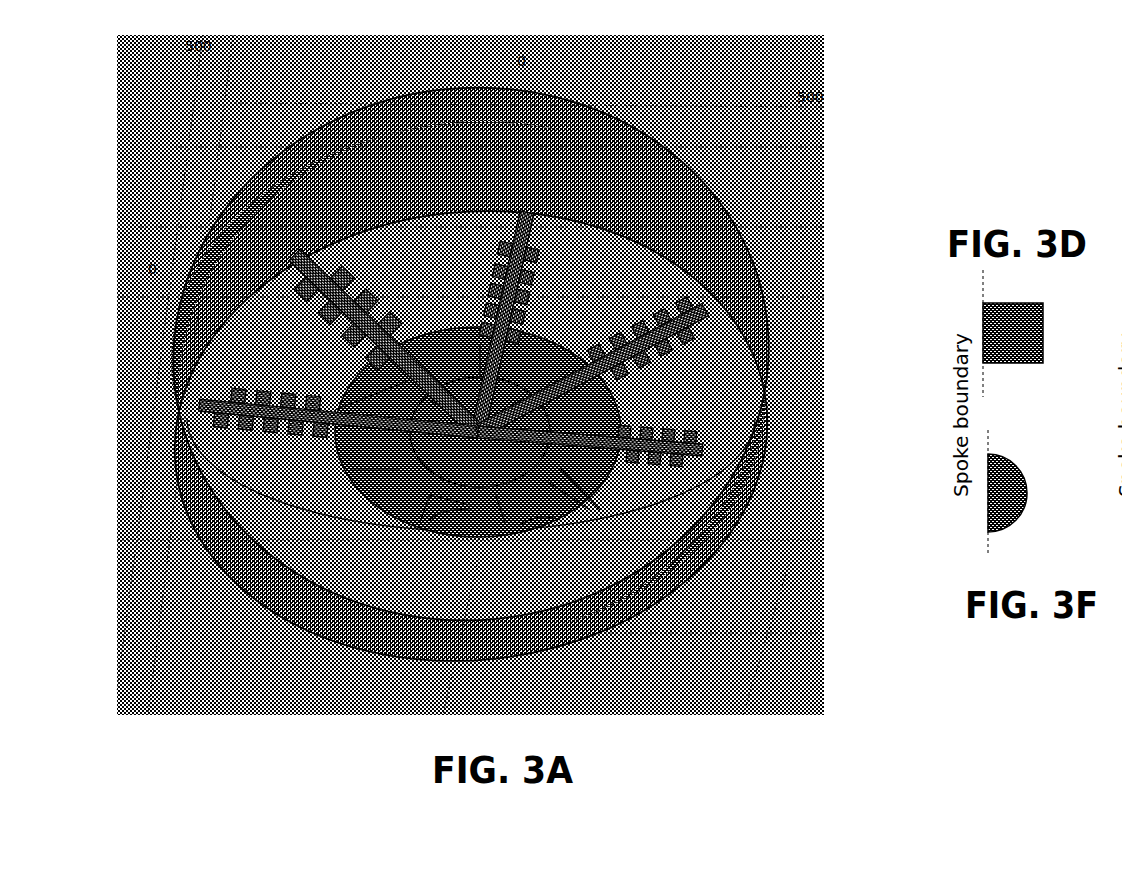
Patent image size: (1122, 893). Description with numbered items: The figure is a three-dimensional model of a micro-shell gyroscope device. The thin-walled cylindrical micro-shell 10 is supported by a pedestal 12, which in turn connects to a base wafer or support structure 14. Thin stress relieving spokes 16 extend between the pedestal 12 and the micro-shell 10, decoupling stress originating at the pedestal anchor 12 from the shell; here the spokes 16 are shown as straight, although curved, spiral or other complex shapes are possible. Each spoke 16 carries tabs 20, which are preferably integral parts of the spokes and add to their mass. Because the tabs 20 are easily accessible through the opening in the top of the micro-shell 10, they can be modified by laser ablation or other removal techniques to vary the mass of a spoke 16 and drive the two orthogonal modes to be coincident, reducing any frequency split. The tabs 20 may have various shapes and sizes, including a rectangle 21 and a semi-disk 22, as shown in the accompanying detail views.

In FIG. 3A, the micro-shell 10 is at (713, 228).
In FIG. 3A, the pedestal 12 is at (530, 525).
In FIG. 3A, the support structure 14 is at (560, 345).
In FIG. 3A, the stress relieving spokes 16 is at (520, 215).
In FIG. 3A, the tabs 20 is at (642, 333).
In FIG. 3D, the rectangle 21 is at (1033, 338).
In FIG. 3F, the semi-disk 22 is at (1002, 483).